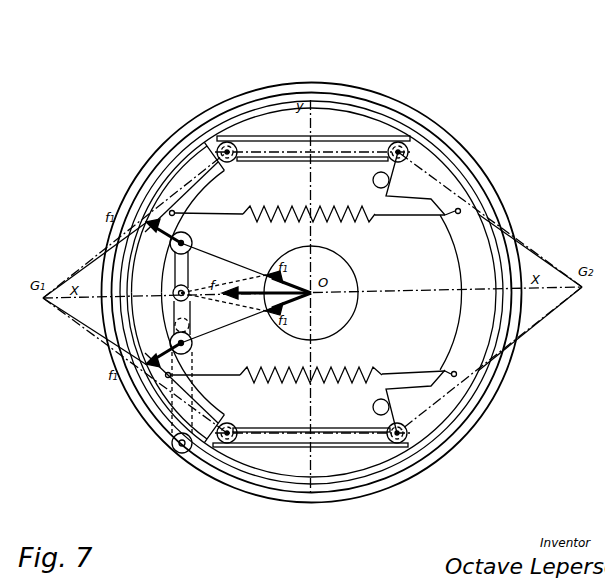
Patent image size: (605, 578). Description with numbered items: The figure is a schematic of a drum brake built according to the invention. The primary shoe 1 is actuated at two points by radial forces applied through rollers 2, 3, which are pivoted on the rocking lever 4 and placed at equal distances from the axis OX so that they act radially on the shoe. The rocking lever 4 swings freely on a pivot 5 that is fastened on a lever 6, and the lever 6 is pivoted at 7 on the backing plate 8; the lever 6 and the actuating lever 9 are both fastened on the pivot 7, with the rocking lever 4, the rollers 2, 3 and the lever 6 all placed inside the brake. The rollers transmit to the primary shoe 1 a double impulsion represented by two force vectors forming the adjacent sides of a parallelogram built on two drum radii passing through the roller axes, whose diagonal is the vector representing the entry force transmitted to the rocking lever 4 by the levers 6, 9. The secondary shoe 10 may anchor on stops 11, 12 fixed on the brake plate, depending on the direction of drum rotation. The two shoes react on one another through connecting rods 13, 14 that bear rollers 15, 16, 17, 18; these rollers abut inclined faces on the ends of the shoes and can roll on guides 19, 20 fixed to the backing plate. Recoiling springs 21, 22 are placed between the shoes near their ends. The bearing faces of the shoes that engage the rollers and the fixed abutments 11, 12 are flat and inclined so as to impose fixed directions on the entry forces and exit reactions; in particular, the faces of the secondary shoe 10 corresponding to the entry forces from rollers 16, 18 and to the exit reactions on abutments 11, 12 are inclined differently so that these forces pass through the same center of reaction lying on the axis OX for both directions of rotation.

The primary shoe 1 is at (143, 262).
The roller 2 is at (192, 240).
The roller 3 is at (192, 346).
The rocking lever 4 is at (188, 280).
The pivot 5 is at (188, 297).
The lever 6 is at (167, 313).
The pivot 7 is at (128, 368).
The backing plate 8 is at (316, 293).
The actuating lever 9 is at (172, 441).
The secondary shoe 10 is at (482, 305).
The stop 11 is at (379, 184).
The stop 12 is at (373, 407).
The connecting rod 13 is at (300, 161).
The connecting rod 14 is at (275, 428).
The roller 15 is at (236, 148).
The roller 16 is at (403, 144).
The roller 17 is at (230, 444).
The roller 18 is at (400, 444).
The guide 19 is at (340, 450).
The guide 20 is at (327, 137).
The recoiling spring 21 is at (303, 218).
The recoiling spring 22 is at (292, 372).